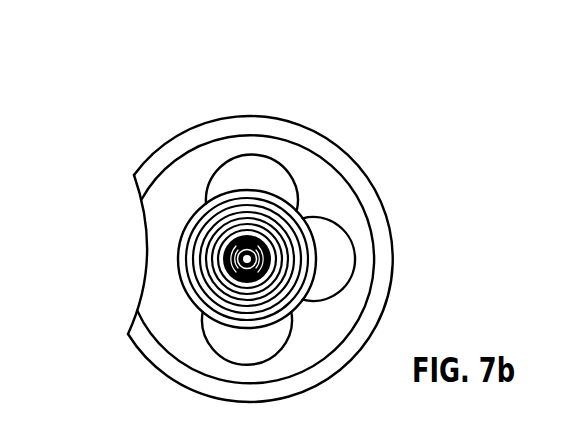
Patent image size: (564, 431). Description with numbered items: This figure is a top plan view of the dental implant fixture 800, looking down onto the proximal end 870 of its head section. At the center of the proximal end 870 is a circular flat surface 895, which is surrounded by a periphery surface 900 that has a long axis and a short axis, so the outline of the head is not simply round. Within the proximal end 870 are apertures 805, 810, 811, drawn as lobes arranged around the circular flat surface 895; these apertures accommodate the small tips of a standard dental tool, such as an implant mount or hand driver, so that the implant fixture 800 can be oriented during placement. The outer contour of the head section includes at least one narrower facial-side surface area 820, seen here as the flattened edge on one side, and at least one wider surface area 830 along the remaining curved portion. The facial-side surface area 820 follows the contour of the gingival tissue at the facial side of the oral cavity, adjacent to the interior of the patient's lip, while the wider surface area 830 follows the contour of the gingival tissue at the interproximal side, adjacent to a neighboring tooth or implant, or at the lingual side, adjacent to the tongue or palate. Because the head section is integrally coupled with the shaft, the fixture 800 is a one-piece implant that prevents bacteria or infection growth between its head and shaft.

The dental implant fixture 800 is at (237, 87).
The aperture 805 is at (272, 173).
The aperture 810 is at (263, 350).
The aperture 811 is at (347, 253).
The facial-side surface area 820 is at (147, 262).
The surface area 830 is at (282, 122).
The proximal end 870 is at (183, 170).
The circular flat surface 895 is at (183, 233).
The periphery surface 900 is at (335, 197).